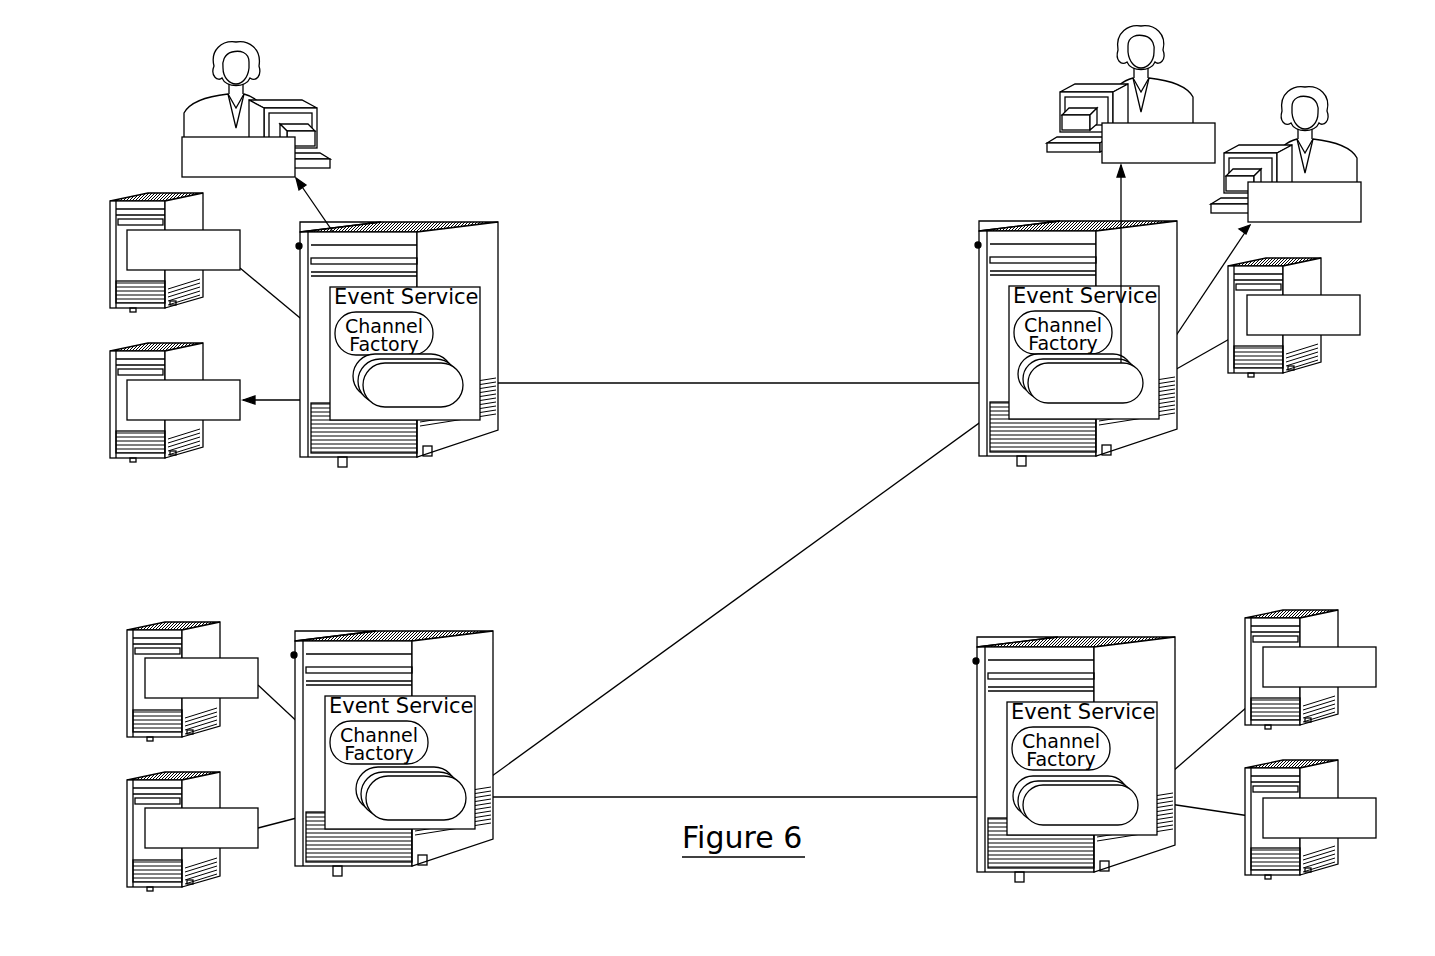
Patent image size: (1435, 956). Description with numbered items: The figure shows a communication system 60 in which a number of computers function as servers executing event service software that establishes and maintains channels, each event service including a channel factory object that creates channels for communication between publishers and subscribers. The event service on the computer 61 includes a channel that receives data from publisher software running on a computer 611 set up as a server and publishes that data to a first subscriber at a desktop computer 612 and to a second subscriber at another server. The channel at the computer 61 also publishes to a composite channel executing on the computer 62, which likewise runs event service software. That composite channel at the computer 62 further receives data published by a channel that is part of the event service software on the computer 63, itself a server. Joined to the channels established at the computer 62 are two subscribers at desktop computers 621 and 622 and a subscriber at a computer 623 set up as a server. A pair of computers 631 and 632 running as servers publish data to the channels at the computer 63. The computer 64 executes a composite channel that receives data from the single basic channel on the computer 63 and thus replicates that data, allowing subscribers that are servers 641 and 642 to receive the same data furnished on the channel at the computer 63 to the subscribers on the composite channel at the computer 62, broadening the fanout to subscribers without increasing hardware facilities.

The communication system 60 is at (760, 191).
The computer 61 is at (480, 318).
The computer 62 is at (1010, 347).
The computer 63 is at (480, 725).
The computer 64 is at (1010, 750).
The computer 611 is at (218, 230).
The desktop computer 612 is at (182, 155).
The desktop computer 621 is at (1197, 122).
The desktop computer 622 is at (1363, 200).
The computer 623 is at (1360, 312).
The computer 631 is at (238, 658).
The computer 632 is at (235, 808).
The server 641 is at (1376, 665).
The server 642 is at (1376, 815).